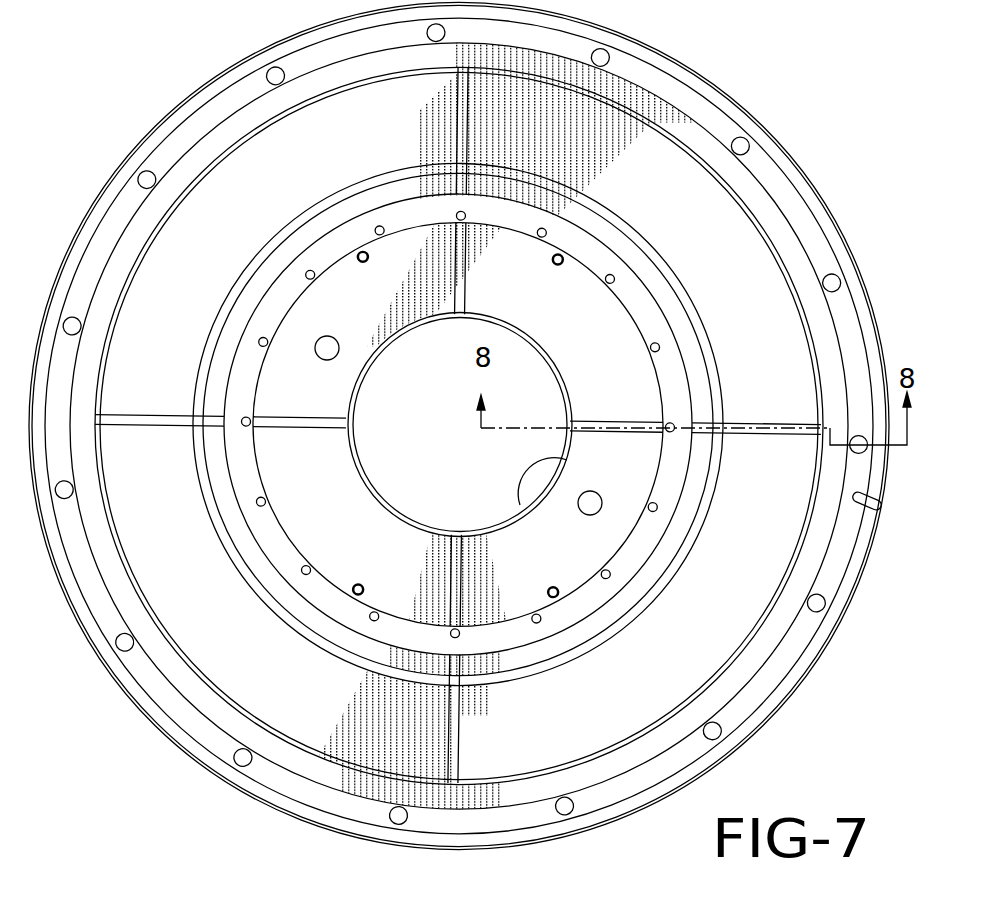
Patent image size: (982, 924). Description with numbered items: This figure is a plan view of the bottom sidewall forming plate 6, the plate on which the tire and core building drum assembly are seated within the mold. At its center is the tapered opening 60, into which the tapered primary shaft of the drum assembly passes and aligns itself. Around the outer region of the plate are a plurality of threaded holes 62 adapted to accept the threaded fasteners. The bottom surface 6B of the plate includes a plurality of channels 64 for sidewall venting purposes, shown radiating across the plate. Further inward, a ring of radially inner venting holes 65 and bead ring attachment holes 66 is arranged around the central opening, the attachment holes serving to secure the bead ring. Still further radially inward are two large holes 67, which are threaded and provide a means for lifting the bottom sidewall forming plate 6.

The bottom sidewall forming plate 6 is at (165, 562).
The bottom surface 6B is at (150, 325).
The tapered opening 60 is at (521, 507).
The holes 62 is at (752, 156).
The channels 64 is at (460, 733).
The radially inner venting holes 65 is at (305, 578).
The bead ring attachment holes 66 is at (355, 598).
The large holes 67 is at (340, 358).